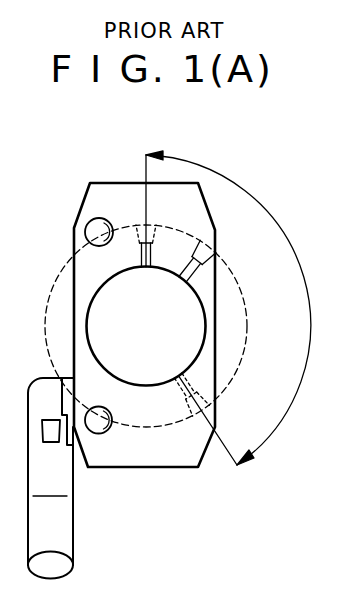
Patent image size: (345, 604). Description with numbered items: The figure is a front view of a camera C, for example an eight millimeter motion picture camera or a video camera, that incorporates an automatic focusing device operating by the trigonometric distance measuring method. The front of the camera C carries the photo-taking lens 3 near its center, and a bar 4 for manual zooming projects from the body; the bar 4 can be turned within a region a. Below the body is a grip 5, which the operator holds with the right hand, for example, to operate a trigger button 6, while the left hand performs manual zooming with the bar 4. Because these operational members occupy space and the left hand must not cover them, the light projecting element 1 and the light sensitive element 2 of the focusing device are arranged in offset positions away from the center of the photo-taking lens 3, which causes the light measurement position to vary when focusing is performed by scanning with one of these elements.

The light projecting element 1 is at (111, 423).
The light sensitive element 2 is at (85, 237).
The photo-taking lens 3 is at (88, 328).
The bar 4 is at (203, 250).
The grip 5 is at (62, 537).
The trigger button 6 is at (49, 420).
The camera C is at (173, 453).
The region a is at (232, 308).